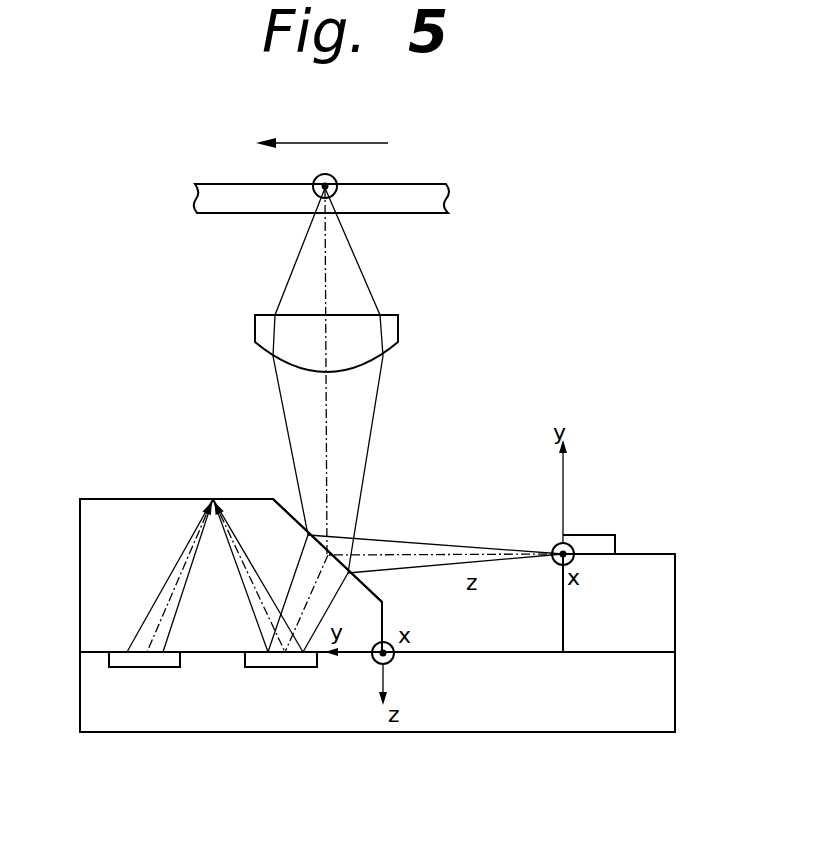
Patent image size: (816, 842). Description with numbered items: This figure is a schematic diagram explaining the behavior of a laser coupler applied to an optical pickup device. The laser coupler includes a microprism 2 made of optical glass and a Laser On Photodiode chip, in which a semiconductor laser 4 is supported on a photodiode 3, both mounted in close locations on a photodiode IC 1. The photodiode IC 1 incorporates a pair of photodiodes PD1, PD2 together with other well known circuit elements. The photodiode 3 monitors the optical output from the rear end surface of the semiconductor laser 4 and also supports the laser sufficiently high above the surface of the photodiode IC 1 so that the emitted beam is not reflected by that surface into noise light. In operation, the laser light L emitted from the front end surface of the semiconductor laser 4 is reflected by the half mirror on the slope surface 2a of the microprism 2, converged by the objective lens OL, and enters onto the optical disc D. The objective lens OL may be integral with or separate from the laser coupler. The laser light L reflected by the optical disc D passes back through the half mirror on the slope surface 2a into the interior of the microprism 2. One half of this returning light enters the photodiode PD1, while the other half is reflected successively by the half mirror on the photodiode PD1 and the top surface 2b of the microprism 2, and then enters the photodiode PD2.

The optical disc D is at (438, 200).
The objective lens OL is at (393, 332).
The laser light L is at (450, 545).
The microprism 2 is at (205, 539).
The slope surface 2a is at (285, 504).
The top surface 2b is at (131, 499).
The photodiode PD1 is at (282, 660).
The photodiode PD2 is at (145, 660).
The photodiode IC 1 is at (547, 715).
The photodiode 3 is at (663, 613).
The semiconductor laser 4 is at (608, 543).